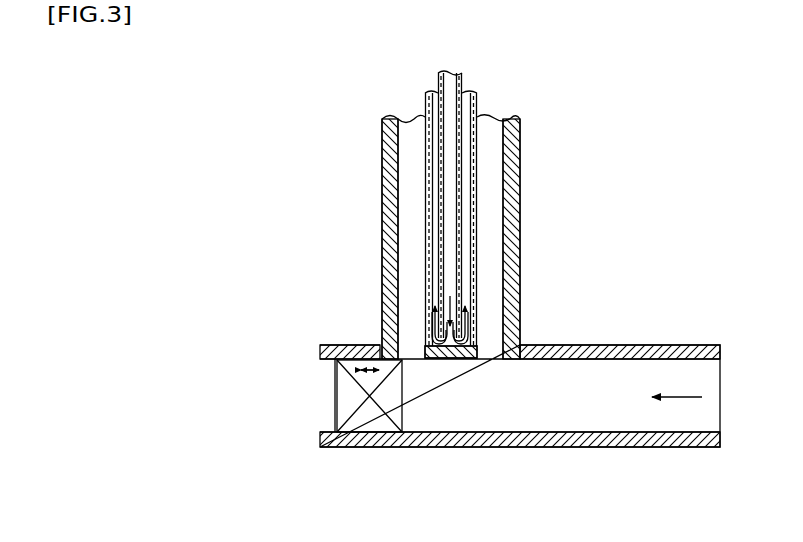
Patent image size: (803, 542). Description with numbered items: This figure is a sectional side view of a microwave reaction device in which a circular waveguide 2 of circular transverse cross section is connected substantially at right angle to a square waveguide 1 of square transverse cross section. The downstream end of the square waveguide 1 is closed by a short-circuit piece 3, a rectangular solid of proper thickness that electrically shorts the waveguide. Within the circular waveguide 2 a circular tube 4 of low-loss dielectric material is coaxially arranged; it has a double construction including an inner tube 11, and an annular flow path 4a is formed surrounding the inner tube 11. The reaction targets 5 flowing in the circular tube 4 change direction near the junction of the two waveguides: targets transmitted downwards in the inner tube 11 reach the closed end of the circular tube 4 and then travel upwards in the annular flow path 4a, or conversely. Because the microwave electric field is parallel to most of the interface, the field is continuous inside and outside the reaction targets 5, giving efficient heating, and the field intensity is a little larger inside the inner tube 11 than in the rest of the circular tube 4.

The square waveguide 1 is at (622, 345).
The circular waveguide 2 is at (392, 237).
The short-circuit piece 3 is at (369, 418).
The circular tube 4 is at (477, 185).
The annular flow path 4a is at (462, 233).
The reaction target 5 is at (466, 313).
The inner tube 11 is at (443, 90).